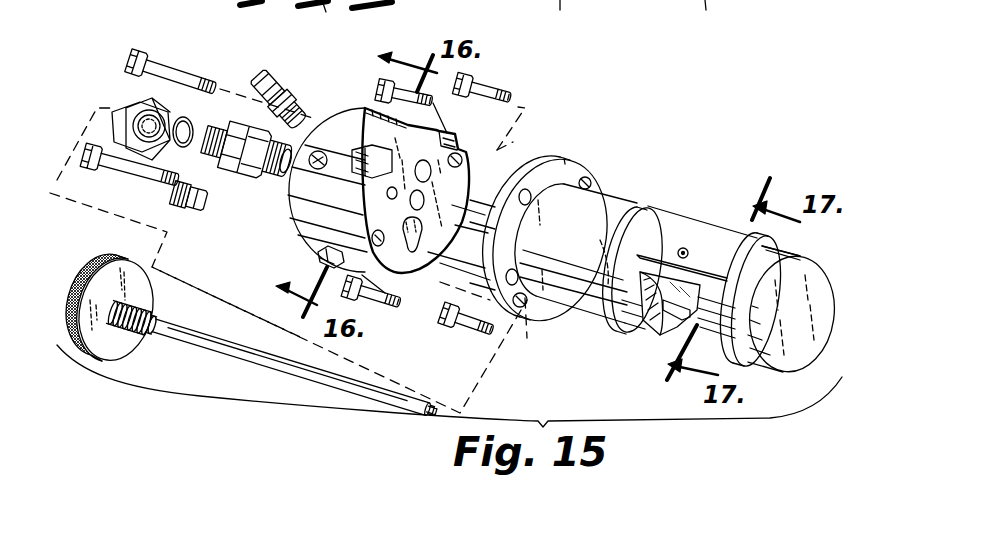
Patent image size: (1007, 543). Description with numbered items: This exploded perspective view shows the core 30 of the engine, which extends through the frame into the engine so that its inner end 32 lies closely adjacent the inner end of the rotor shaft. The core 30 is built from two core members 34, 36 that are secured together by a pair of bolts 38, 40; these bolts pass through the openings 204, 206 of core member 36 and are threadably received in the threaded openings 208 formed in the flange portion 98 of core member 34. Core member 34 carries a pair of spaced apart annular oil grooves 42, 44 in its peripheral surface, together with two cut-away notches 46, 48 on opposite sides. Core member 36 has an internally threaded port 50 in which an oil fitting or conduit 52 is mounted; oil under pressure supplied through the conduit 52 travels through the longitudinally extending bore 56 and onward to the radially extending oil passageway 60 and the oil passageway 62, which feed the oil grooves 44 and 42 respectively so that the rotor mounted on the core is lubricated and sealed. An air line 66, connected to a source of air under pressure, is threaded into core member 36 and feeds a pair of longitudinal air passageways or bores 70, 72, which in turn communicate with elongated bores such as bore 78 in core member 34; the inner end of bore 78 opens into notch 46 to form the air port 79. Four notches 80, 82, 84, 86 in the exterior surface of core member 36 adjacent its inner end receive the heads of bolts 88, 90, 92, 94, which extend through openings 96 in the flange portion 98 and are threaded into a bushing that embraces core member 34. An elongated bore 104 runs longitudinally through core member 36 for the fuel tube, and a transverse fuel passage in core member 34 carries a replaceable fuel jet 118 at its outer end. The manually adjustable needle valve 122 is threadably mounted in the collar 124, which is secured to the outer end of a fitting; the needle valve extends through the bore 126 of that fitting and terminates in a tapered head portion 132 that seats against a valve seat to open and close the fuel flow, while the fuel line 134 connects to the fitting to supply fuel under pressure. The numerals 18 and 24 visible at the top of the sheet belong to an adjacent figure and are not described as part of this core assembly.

The housing 18 is at (467, 0).
The member 24 is at (627, 0).
The core 30 is at (247, 180).
The inner end of core 32 is at (817, 303).
The core member 34 is at (620, 208).
The core member 36 is at (328, 118).
The bolt 38 is at (128, 172).
The bolt 40 is at (158, 57).
The annular oil groove 42 is at (773, 250).
The annular oil groove 44 is at (658, 208).
The notch 46 is at (700, 337).
The notch 48 is at (730, 238).
The internally threaded port 50 is at (312, 170).
The oil fitting or conduit 52 is at (272, 68).
The longitudinally extending bore 56 is at (360, 184).
The radially extending oil passageway 60 is at (620, 250).
The oil passageway 62 is at (736, 272).
The air line 66 is at (320, 255).
The air passageway or bore 70 is at (429, 167).
The air passageway or bore 72 is at (421, 292).
The elongated air passageway or bore 78 is at (657, 333).
The air port 79 is at (680, 323).
The notch 80 is at (408, 255).
The notch 82 is at (362, 112).
The notch 84 is at (444, 138).
The notch 86 is at (453, 305).
The bolt 88 is at (370, 300).
The bolt 90 is at (378, 80).
The bolt 92 is at (476, 76).
The bolt 94 is at (470, 330).
The openings 96 is at (589, 180).
The flange portion 98 is at (563, 168).
The elongated bore 104 is at (300, 232).
The replaceable fuel jet 118 is at (686, 249).
The manually adjustable needle valve 122 is at (113, 350).
The collar 124 is at (128, 92).
The bore 126 is at (253, 353).
The tapered head portion 132 is at (428, 407).
The fuel line 134 is at (187, 213).
The opening 204 is at (320, 270).
The opening 206 is at (500, 147).
The threaded openings 208 is at (513, 285).